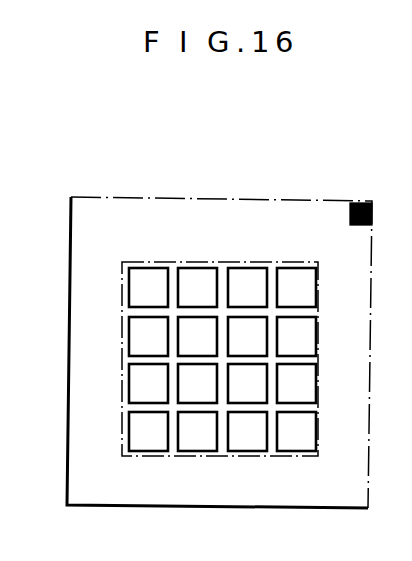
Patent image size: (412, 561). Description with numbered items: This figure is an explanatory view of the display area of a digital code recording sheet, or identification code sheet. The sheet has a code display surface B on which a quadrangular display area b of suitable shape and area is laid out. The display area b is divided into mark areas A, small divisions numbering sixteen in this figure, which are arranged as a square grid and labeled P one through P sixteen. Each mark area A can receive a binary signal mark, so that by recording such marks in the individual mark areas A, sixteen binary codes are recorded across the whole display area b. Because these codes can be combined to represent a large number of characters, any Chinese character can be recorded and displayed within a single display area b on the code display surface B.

The mark area A is at (308, 272).
The code display surface B is at (213, 197).
The display area b is at (147, 262).